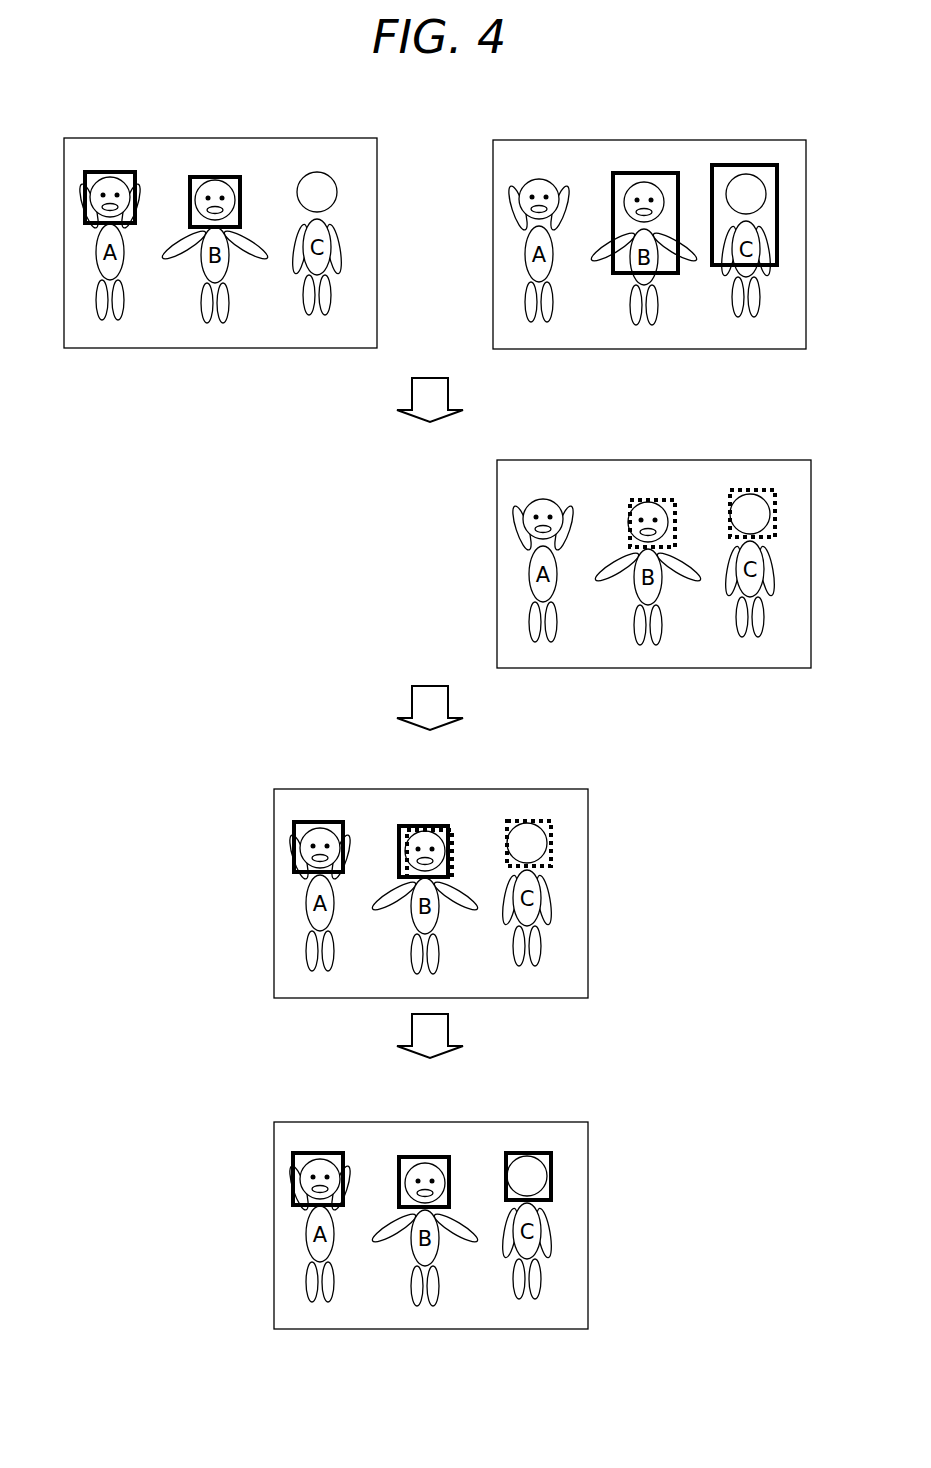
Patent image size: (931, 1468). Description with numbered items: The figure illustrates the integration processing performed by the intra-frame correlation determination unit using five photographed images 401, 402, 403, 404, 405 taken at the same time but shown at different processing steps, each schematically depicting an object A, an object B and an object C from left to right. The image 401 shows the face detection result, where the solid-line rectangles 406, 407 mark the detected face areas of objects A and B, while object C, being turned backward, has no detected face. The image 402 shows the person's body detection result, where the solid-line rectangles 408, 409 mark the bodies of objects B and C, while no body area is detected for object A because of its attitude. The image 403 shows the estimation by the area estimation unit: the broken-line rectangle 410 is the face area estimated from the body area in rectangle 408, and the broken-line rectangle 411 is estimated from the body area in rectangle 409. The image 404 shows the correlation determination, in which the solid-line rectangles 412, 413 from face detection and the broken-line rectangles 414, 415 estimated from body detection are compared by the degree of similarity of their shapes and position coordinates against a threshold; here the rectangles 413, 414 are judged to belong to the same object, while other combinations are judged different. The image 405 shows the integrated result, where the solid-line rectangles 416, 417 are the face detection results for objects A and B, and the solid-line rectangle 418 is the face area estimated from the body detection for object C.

The image 401 is at (378, 168).
The image 402 is at (806, 170).
The image 403 is at (811, 488).
The image 404 is at (588, 818).
The image 405 is at (588, 1150).
The rectangle of solid line 406 is at (113, 172).
The rectangle of solid line 407 is at (216, 177).
The rectangle of solid line 408 is at (648, 173).
The rectangle of solid line 409 is at (747, 165).
The rectangle of broken line 410 is at (665, 500).
The rectangle of broken line 411 is at (765, 490).
The rectangle of solid line 412 is at (322, 822).
The rectangle of solid line 413 is at (420, 826).
The rectangle of broken line 414 is at (457, 837).
The rectangle of broken line 415 is at (542, 821).
The rectangle of solid line 416 is at (322, 1153).
The rectangle of solid line 417 is at (420, 1157).
The rectangle of solid line 418 is at (540, 1153).